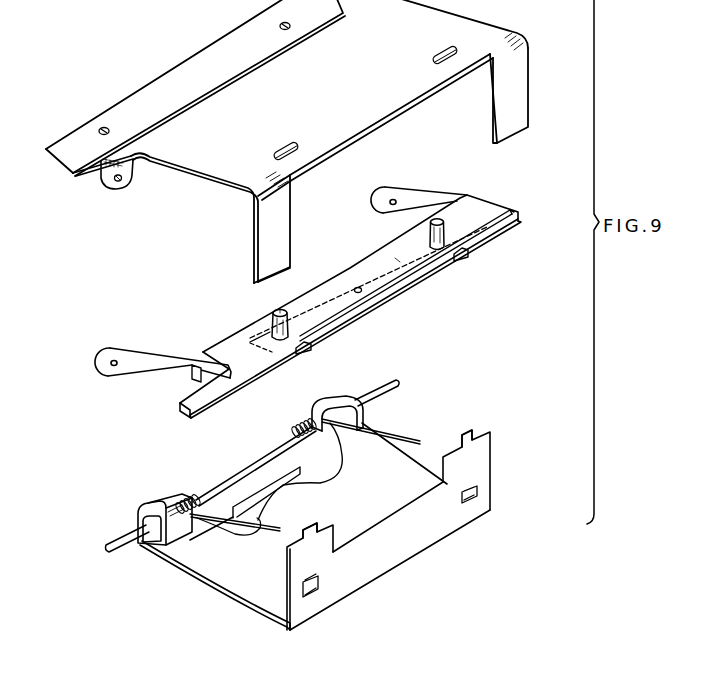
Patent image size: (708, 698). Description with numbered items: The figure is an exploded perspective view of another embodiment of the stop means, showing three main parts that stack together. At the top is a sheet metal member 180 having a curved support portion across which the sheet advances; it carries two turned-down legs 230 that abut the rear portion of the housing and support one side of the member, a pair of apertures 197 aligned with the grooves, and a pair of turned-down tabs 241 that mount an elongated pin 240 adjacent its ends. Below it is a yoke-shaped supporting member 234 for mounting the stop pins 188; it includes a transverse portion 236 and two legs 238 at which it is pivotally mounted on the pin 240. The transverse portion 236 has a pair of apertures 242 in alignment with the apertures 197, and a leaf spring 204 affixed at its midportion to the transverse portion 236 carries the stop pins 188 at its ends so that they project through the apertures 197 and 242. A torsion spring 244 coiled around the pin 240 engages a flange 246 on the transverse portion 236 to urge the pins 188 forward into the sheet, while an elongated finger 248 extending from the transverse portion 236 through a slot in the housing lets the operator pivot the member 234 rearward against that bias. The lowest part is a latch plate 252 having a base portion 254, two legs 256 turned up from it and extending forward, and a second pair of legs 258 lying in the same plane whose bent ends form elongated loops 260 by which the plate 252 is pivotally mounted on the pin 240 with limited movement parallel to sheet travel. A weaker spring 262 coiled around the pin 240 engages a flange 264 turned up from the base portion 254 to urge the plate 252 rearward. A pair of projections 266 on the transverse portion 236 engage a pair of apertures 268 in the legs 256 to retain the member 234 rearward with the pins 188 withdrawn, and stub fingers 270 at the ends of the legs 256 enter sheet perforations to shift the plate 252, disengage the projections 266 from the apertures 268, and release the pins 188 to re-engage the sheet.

The sheet metal member 180 is at (197, 53).
The stop pins 188 is at (281, 310).
The apertures 197 is at (290, 116).
The leaf spring 204 is at (400, 262).
The turned-down legs 230 is at (272, 248).
The yoke-shaped supporting member 234 is at (396, 298).
The transverse portion 236 is at (350, 318).
The legs 238 is at (406, 200).
The elongated pin 240 is at (396, 372).
The tabs 241 is at (110, 170).
The apertures 242 is at (273, 320).
The torsion spring 244 is at (405, 432).
The flange 246 is at (200, 375).
The elongated finger 248 is at (190, 404).
The latch plate 252 is at (257, 580).
The base portion 254 is at (233, 587).
The legs 256 is at (478, 460).
The second pair of legs 258 is at (143, 542).
The elongated loops 260 is at (335, 402).
The spring 262 is at (303, 480).
The flange 264 is at (270, 466).
The projections 266 is at (304, 352).
The apertures 268 is at (472, 504).
The stub fingers 270 is at (467, 430).